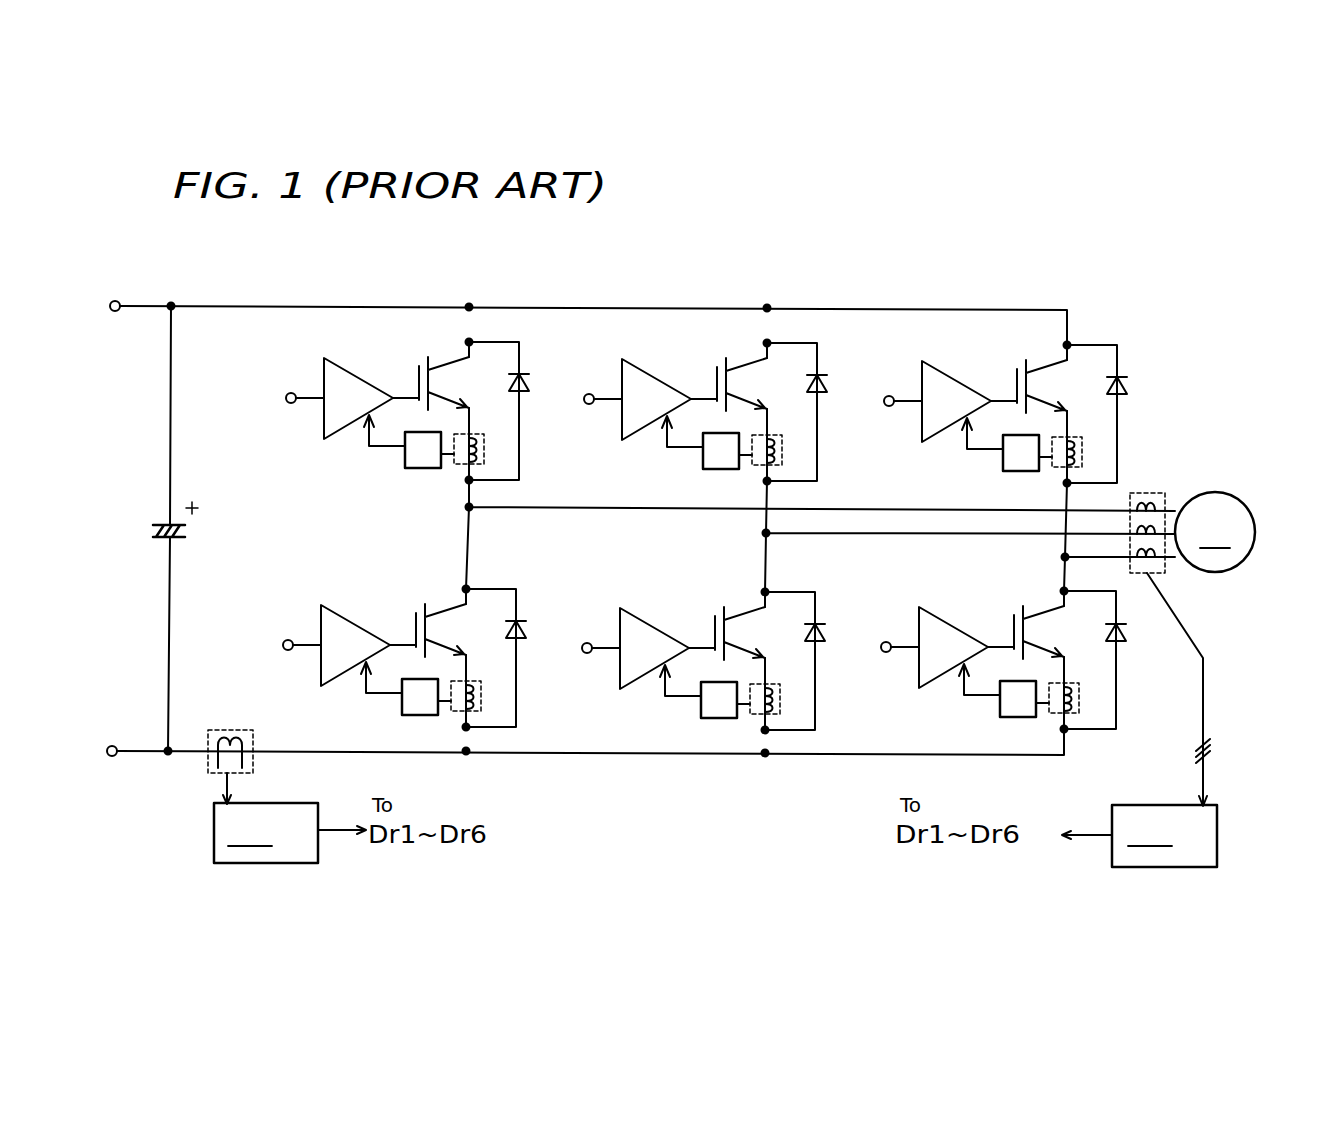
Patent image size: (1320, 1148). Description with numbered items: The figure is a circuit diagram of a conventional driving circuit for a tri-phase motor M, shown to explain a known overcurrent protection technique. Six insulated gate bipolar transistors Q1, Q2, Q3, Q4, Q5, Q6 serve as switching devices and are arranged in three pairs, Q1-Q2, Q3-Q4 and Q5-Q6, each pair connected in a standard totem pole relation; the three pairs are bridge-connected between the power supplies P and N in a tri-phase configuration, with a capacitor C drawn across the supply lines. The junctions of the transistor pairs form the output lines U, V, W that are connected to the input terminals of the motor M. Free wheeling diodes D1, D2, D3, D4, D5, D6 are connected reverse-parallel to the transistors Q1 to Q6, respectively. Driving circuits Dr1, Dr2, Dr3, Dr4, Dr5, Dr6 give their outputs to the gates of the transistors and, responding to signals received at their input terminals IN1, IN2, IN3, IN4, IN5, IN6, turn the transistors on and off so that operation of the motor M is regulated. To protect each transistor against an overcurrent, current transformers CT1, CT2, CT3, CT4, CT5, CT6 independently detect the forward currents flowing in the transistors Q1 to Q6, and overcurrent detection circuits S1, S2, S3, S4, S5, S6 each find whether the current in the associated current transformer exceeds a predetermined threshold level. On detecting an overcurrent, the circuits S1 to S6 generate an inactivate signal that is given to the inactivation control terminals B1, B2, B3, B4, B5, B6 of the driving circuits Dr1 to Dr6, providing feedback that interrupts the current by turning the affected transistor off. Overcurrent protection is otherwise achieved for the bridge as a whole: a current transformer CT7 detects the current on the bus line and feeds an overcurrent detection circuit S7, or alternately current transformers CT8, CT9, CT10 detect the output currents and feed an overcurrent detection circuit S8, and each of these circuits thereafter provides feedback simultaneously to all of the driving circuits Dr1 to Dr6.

The power supply P is at (573, 319).
The power supply N is at (568, 750).
The smoothing capacitor C is at (162, 541).
The transistor Q1 is at (431, 366).
The transistor Q2 is at (419, 607).
The transistor Q3 is at (723, 367).
The transistor Q4 is at (718, 610).
The transistor Q5 is at (1028, 370).
The transistor Q6 is at (1019, 613).
The free wheeling diode D1 is at (541, 413).
The free wheeling diode D2 is at (535, 603).
The free wheeling diode D3 is at (840, 415).
The free wheeling diode D4 is at (835, 612).
The free wheeling diode D5 is at (1144, 373).
The free wheeling diode D6 is at (1137, 658).
The driving circuit Dr1 is at (358, 398).
The driving circuit Dr2 is at (355, 645).
The driving circuit Dr3 is at (656, 399).
The driving circuit Dr4 is at (654, 648).
The driving circuit Dr5 is at (956, 401).
The driving circuit Dr6 is at (953, 647).
The input terminal IN1 is at (294, 391).
The input terminal IN2 is at (292, 637).
The input terminal IN3 is at (596, 392).
The input terminal IN4 is at (592, 641).
The input terminal IN5 is at (897, 393).
The input terminal IN6 is at (895, 638).
The inactivation control terminal B1 is at (354, 453).
The inactivation control terminal B2 is at (353, 701).
The inactivation control terminal B3 is at (653, 453).
The inactivation control terminal B4 is at (649, 709).
The inactivation control terminal B5 is at (954, 453).
The inactivation control terminal B6 is at (946, 695).
The overcurrent detection circuit S1 is at (407, 469).
The overcurrent detection circuit S2 is at (415, 715).
The overcurrent detection circuit S3 is at (703, 465).
The overcurrent detection circuit S4 is at (705, 716).
The overcurrent detection circuit S5 is at (1003, 468).
The overcurrent detection circuit S6 is at (995, 715).
The current transformer CT1 is at (515, 461).
The current transformer CT2 is at (513, 713).
The current transformer CT3 is at (817, 463).
The current transformer CT4 is at (814, 719).
The current transformer CT5 is at (1115, 442).
The current transformer CT6 is at (1112, 708).
The current transformer CT7 is at (237, 730).
The current transformer CT8 is at (1155, 492).
The current transformer CT9 is at (1167, 507).
The current transformer CT10 is at (1170, 577).
The overcurrent detection circuit S7 is at (290, 833).
The overcurrent detection circuit S8 is at (1139, 720).
The U-phase output terminal U is at (821, 534).
The V-phase output terminal V is at (969, 536).
The W-phase output terminal W is at (1119, 537).
The motor M is at (1215, 532).